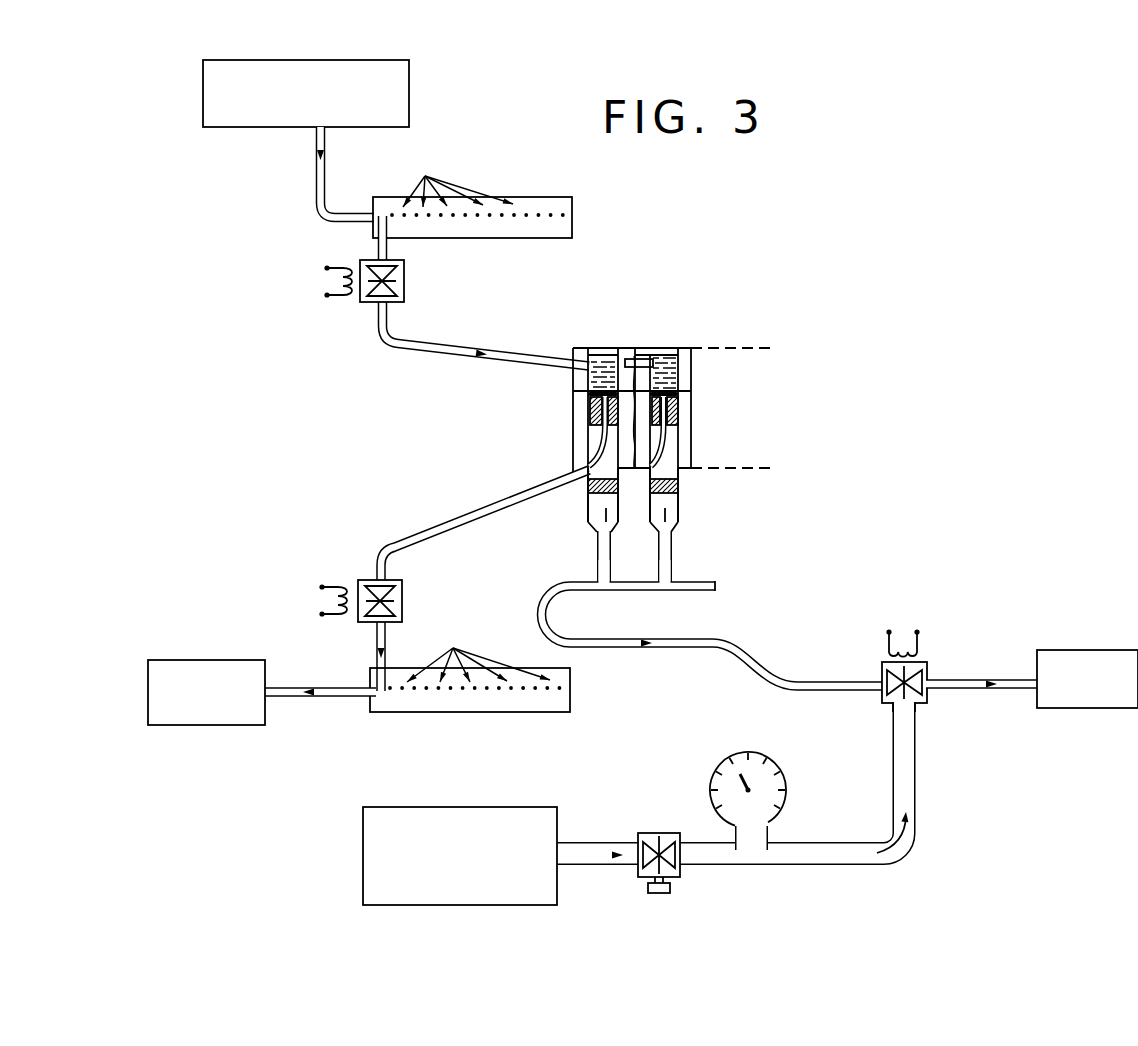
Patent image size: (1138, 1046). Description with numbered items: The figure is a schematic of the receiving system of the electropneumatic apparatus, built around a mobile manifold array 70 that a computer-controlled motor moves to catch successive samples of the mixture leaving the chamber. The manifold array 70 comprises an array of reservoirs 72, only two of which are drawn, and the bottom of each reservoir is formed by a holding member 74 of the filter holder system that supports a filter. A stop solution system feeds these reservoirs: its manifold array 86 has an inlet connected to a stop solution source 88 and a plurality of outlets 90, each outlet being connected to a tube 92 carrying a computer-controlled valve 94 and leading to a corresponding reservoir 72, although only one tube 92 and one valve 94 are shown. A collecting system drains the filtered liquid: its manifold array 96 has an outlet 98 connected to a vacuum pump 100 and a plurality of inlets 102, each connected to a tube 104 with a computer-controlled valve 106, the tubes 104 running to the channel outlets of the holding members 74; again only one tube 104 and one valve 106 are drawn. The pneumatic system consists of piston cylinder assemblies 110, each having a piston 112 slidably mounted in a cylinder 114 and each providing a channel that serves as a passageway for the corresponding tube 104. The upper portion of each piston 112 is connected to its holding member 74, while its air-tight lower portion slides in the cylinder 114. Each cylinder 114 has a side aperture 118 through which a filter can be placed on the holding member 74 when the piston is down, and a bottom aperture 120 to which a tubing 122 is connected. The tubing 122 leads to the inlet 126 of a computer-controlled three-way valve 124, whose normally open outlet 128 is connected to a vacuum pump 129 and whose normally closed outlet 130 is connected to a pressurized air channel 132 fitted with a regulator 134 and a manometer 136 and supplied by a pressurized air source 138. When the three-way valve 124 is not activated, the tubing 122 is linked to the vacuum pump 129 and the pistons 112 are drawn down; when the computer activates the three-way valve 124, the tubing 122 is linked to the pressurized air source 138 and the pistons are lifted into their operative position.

The mobile manifold array 70 is at (684, 452).
The reservoirs 72 is at (660, 347).
The holding members 74 is at (590, 423).
The manifold array 86 is at (542, 197).
The stop solution source 88 is at (409, 96).
The outlets 90 is at (458, 176).
The tubes 92 is at (377, 247).
The valve 94 is at (372, 305).
The manifold array 96 is at (470, 714).
The outlet 98 is at (347, 700).
The vacuum pump 100 is at (215, 660).
The inlets 102 is at (478, 653).
The tubes 104 is at (497, 497).
The valve 106 is at (403, 590).
The piston cylinder assemblies 110 is at (577, 502).
The piston 112 is at (588, 483).
The cylinder 114 is at (606, 508).
The side aperture 118 is at (586, 394).
The bottom aperture 120 is at (597, 522).
The tubing 122 is at (713, 623).
The three-way valve 124 is at (929, 718).
The inlet 126 is at (860, 681).
The normally open outlet 128 is at (930, 682).
The vacuum pump 129 is at (1085, 650).
The normally closed outlet 130 is at (902, 708).
The pressurized air channel 132 is at (828, 857).
The regulator 134 is at (661, 833).
The manometer 136 is at (742, 752).
The pressurized air source 138 is at (365, 853).